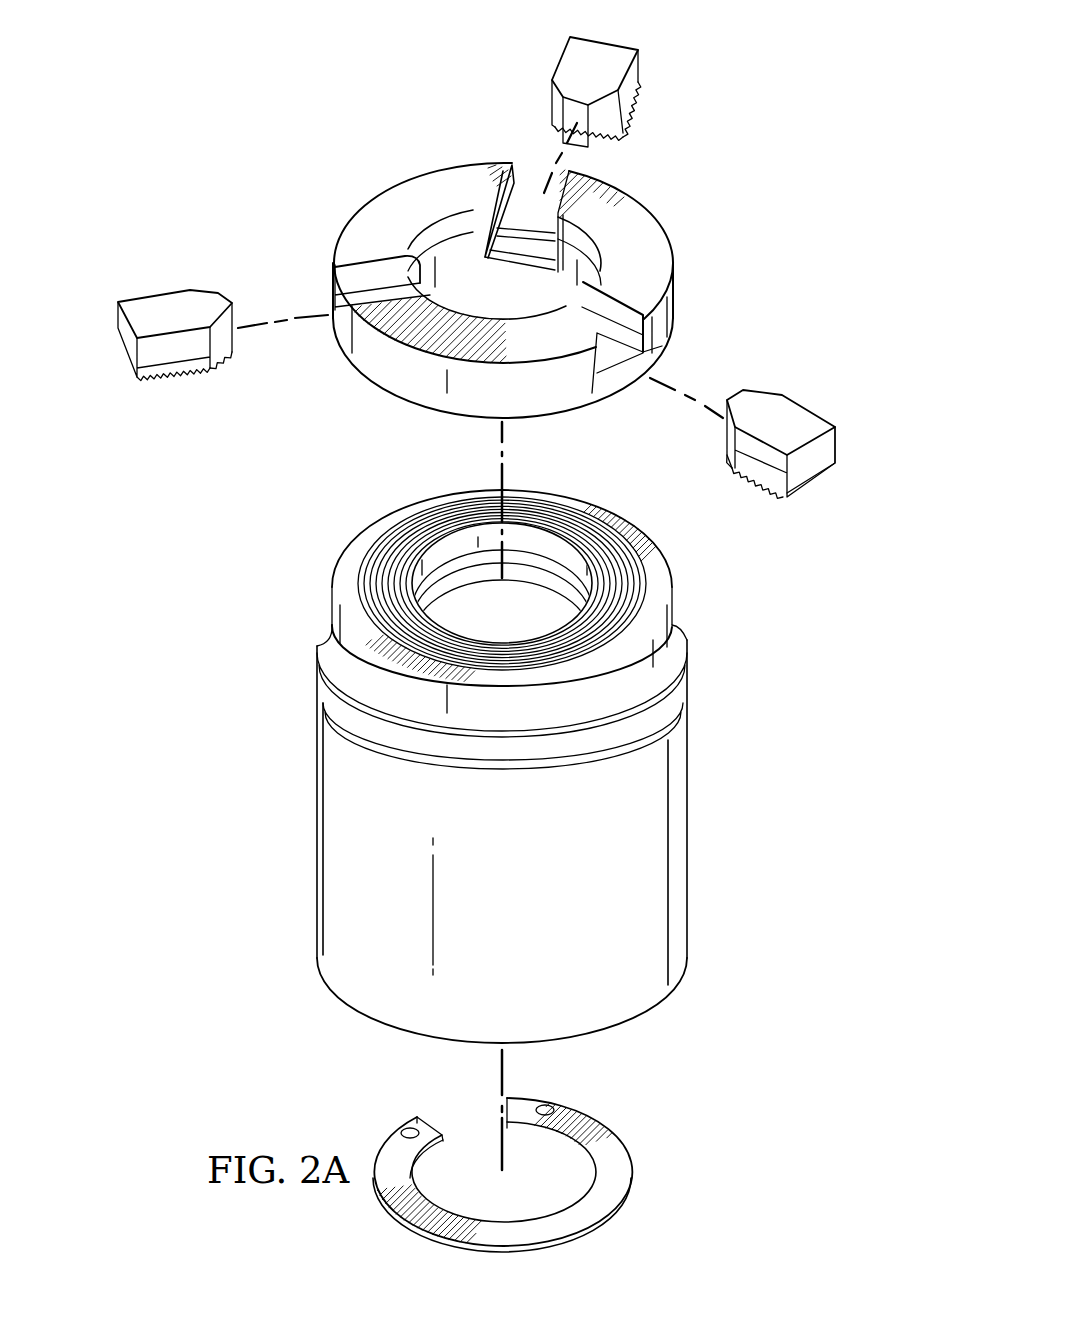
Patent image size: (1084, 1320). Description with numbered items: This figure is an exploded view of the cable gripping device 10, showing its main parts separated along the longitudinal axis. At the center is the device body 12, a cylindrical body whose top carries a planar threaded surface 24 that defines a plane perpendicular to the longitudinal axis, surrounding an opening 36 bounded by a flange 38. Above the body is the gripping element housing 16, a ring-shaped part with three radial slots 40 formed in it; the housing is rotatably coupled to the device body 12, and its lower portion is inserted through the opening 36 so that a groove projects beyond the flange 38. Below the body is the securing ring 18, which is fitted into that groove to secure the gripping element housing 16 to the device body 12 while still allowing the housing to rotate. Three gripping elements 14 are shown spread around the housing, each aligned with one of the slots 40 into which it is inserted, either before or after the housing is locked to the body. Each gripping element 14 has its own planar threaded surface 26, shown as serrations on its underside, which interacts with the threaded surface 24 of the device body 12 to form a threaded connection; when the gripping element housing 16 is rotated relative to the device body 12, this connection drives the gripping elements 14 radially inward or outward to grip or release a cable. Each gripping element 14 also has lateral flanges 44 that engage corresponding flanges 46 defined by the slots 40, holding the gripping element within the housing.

The cable gripping device 10 is at (322, 106).
The device body 12 is at (688, 857).
The gripping element 14 is at (602, 50).
The gripping element housing 16 is at (648, 228).
The securing ring 18 is at (632, 1177).
The threaded surface 24 is at (418, 515).
The threaded surface 26 is at (642, 117).
The opening 36 is at (518, 619).
The flange 38 is at (560, 550).
The slot 40 is at (508, 182).
The lateral flange 44 is at (837, 462).
The flange 46 is at (667, 353).